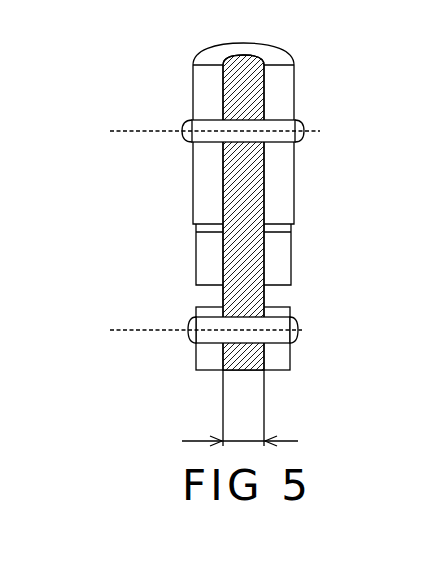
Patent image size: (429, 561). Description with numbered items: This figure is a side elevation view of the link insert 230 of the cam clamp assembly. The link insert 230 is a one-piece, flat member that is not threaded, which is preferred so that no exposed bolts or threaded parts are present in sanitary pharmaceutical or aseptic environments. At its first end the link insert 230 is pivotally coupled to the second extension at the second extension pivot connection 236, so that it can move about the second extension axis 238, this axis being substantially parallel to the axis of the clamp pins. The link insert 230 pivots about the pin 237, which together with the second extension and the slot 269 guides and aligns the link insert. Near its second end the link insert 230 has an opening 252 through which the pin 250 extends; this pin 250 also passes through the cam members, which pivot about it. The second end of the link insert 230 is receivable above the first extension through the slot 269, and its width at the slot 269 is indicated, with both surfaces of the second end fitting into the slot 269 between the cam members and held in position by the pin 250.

The link insert 230 is at (265, 295).
The pin 250 is at (278, 130).
The opening 252 is at (149, 130).
The second extension pivot connection 236 is at (298, 330).
The second extension axis 238 is at (148, 330).
The pin 237 is at (207, 338).
The slot 269 is at (263, 412).